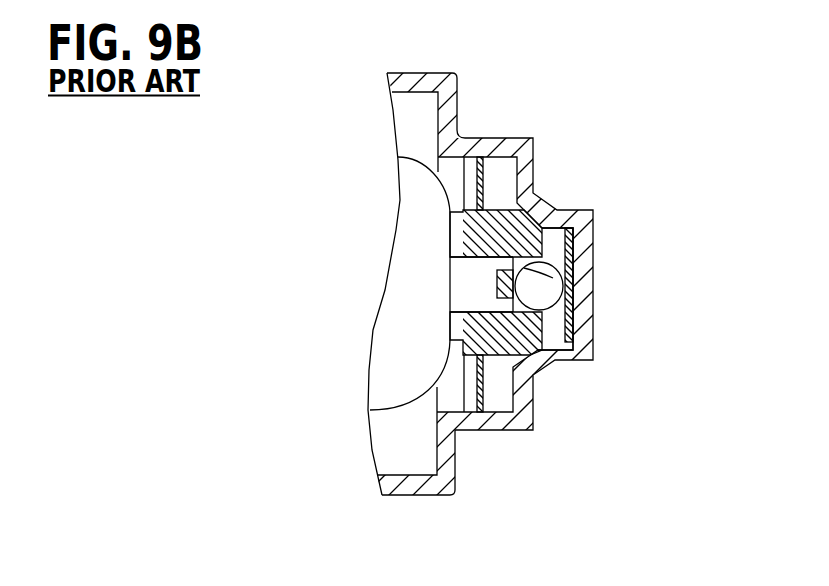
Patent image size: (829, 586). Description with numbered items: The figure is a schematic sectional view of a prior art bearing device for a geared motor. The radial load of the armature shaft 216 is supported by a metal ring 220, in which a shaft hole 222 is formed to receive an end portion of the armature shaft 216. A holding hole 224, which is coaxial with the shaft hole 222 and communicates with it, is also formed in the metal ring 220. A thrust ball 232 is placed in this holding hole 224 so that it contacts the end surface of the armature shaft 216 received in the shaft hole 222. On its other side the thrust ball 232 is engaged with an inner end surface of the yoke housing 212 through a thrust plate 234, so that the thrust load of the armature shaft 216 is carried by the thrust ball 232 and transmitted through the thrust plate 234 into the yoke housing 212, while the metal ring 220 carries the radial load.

The yoke housing 212 is at (507, 148).
The armature shaft 216 is at (462, 298).
The metal ring 220 is at (546, 212).
The shaft hole 222 is at (450, 278).
The holding hole 224 is at (576, 247).
The thrust ball 232 is at (547, 284).
The thrust plate 234 is at (574, 310).